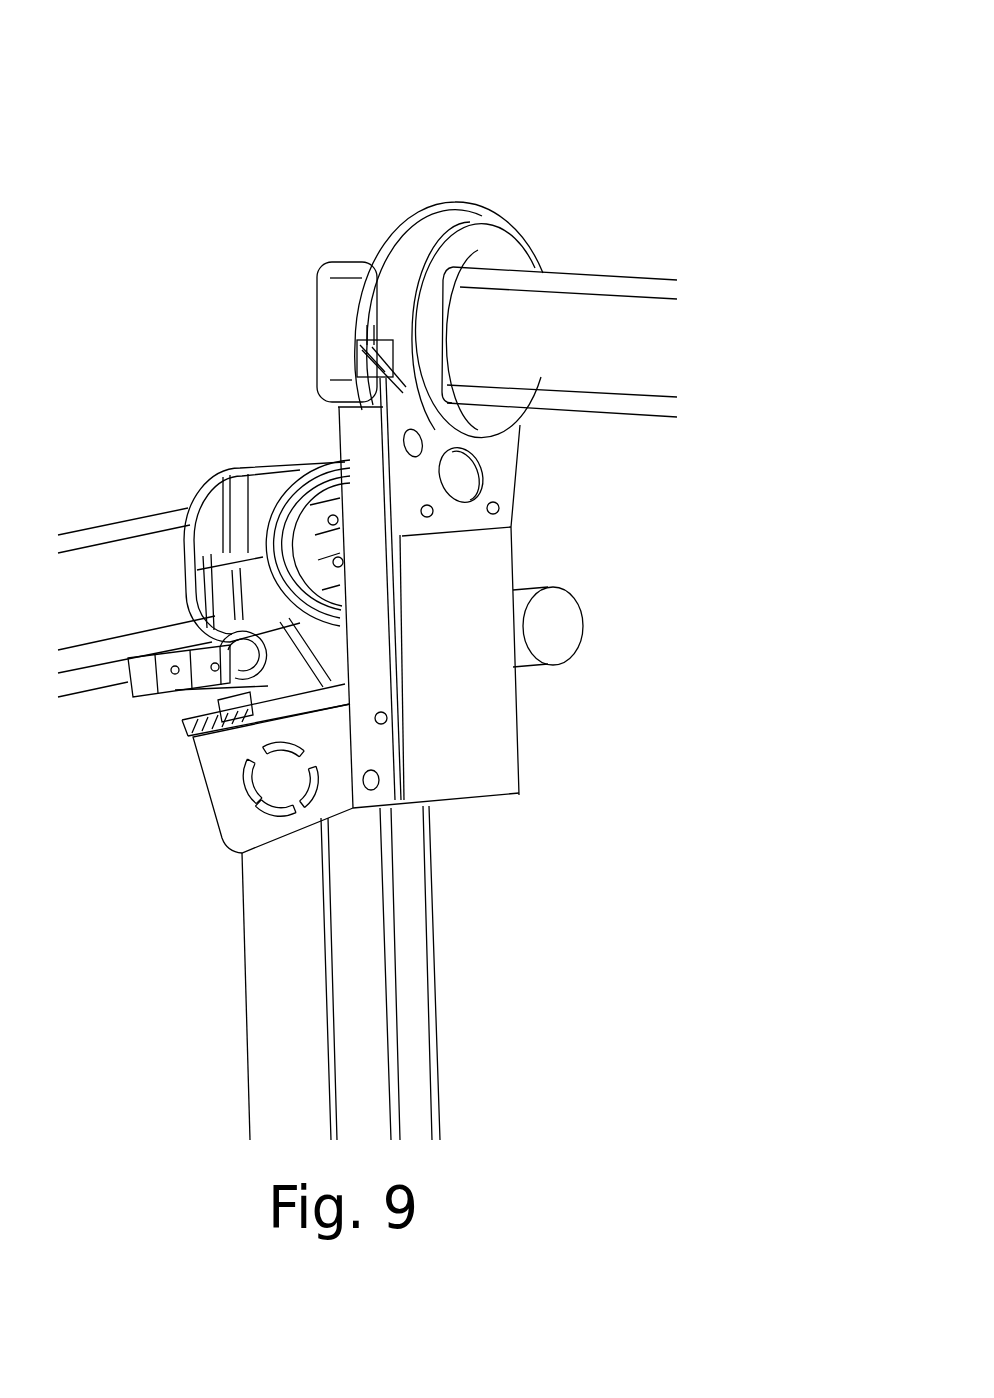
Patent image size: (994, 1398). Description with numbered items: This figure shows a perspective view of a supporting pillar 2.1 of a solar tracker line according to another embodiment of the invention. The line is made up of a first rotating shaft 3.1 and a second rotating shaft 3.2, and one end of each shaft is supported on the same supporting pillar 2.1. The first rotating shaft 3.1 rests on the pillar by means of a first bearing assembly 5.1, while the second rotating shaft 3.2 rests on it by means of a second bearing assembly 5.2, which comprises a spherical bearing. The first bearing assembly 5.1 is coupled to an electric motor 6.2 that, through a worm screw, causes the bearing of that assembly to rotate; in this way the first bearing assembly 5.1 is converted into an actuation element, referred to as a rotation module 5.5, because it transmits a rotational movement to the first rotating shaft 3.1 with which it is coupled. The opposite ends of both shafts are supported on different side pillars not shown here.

The supporting pillar 2.1 is at (372, 1015).
The first rotating shaft 3.1 is at (121, 592).
The second rotating shaft 3.2 is at (590, 345).
The first bearing assembly 5.1 is at (250, 445).
The second bearing assembly 5.2 is at (413, 170).
The rotation module 5.5 is at (252, 698).
The electric motor 6.2 is at (556, 616).